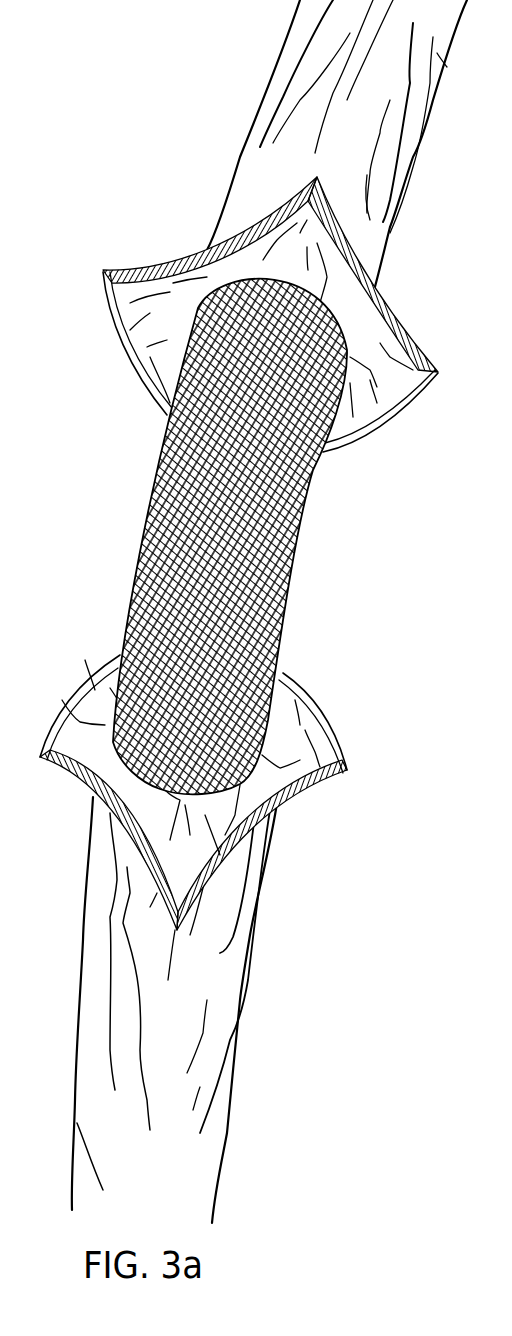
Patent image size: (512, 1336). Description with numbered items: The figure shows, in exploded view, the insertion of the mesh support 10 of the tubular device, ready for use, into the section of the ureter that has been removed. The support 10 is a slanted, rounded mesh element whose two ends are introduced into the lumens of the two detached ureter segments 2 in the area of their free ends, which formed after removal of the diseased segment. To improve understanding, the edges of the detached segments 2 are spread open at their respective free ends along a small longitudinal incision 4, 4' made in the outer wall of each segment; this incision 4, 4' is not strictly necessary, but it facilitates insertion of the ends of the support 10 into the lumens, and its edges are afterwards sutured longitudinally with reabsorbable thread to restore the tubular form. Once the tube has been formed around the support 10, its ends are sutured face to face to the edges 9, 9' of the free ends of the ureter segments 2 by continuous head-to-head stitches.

The ureter segment 2 is at (215, 992).
The incision 4 is at (202, 792).
The incision 4' is at (306, 314).
The edge of free end of ureter segment 9 is at (209, 701).
The edge of free end of ureter segment 9' is at (284, 375).
The mesh support 10 is at (130, 547).